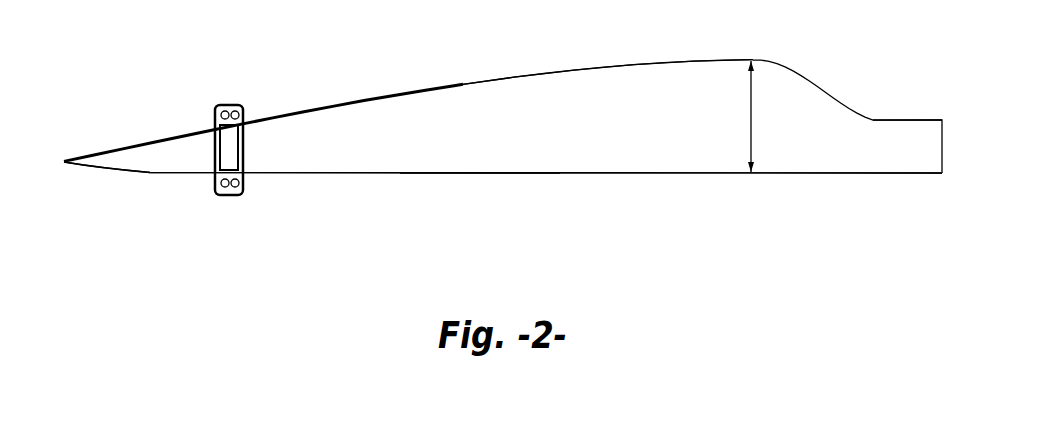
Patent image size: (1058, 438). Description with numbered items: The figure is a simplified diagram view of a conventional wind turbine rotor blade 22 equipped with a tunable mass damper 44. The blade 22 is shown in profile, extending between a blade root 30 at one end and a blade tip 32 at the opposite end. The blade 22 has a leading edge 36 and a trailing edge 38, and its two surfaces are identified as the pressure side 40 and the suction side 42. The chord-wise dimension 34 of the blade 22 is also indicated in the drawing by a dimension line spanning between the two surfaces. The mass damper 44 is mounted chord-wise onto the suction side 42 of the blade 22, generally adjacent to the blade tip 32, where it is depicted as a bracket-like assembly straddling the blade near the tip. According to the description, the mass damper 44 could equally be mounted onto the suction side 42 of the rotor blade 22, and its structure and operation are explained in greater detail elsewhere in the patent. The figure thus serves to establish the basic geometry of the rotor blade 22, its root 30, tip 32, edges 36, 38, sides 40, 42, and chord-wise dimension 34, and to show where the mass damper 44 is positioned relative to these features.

The rotor blade 22 is at (660, 160).
The blade root 30 is at (946, 166).
The blade tip 32 is at (62, 162).
The chord-wise dimension 34 is at (751, 137).
The leading edge 36 is at (580, 176).
The trailing edge 38 is at (563, 72).
The pressure side 40 is at (635, 103).
The suction side 42 is at (478, 157).
The mass damper 44 is at (248, 82).